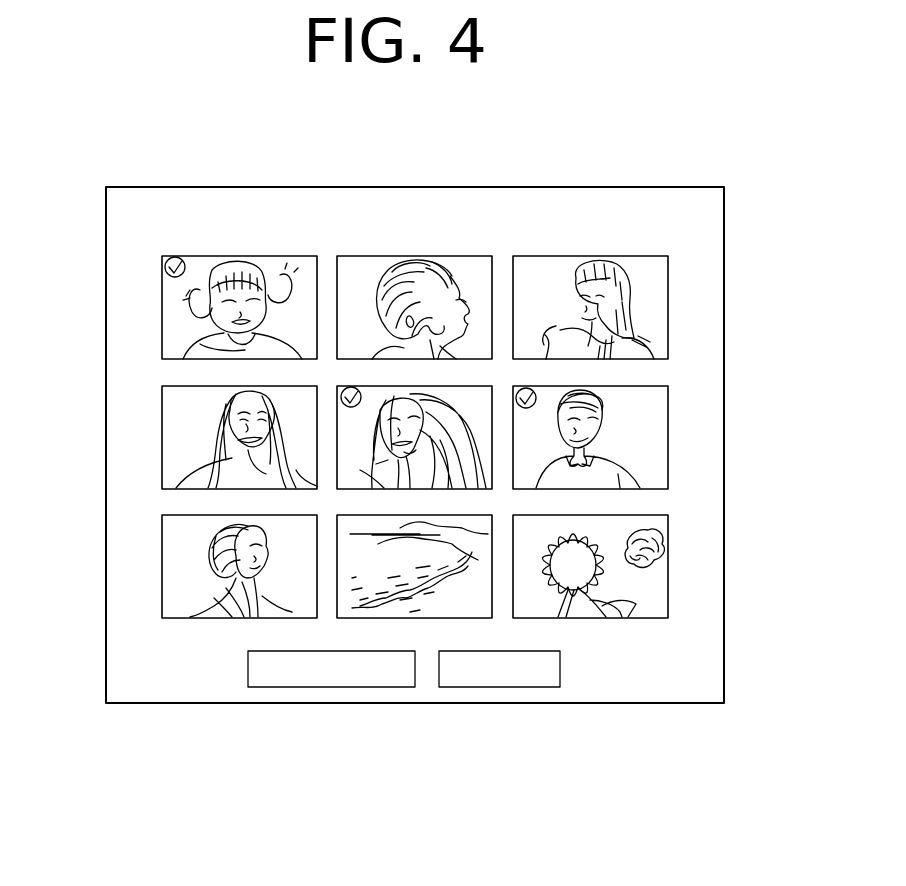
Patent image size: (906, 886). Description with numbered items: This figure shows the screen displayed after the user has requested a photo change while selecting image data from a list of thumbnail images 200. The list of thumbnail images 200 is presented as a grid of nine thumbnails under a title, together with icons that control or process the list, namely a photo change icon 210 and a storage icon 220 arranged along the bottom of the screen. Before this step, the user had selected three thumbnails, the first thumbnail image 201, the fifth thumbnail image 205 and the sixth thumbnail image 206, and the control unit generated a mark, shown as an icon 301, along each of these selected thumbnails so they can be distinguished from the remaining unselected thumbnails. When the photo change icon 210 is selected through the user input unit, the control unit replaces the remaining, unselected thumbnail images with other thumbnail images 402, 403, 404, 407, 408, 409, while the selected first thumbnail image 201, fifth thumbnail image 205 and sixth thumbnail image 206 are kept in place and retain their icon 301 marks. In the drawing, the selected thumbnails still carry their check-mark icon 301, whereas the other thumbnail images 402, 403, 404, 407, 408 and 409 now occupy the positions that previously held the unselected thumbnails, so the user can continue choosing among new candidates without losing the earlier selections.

The list of thumbnail images 200 is at (691, 187).
The first thumbnail image 201 is at (276, 256).
The other thumbnail image 402 is at (486, 256).
The other thumbnail image 403 is at (602, 256).
The other thumbnail image 404 is at (162, 431).
The fifth thumbnail image 205 is at (345, 458).
The sixth thumbnail image 206 is at (668, 415).
The other thumbnail image 407 is at (162, 572).
The other thumbnail image 408 is at (429, 620).
The other thumbnail image 409 is at (668, 548).
The icon 301 is at (520, 389).
The photo change icon 210 is at (291, 688).
The storage icon 220 is at (505, 688).